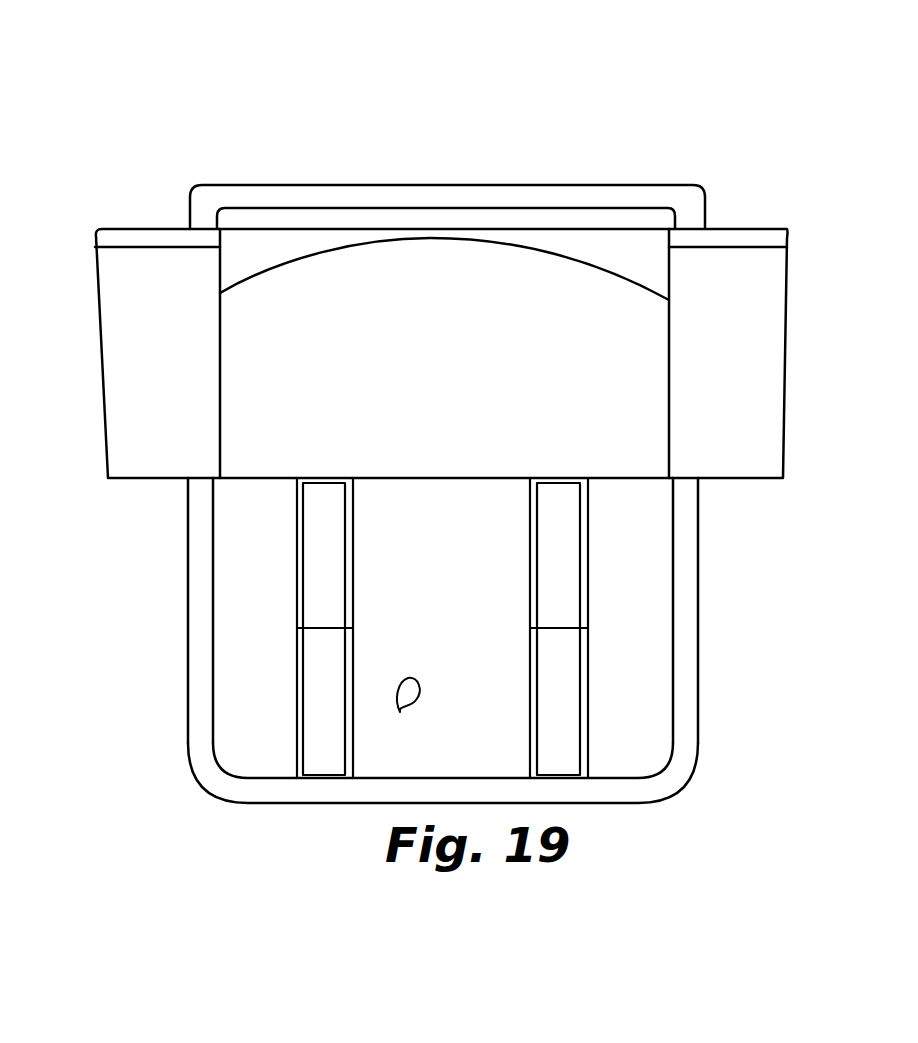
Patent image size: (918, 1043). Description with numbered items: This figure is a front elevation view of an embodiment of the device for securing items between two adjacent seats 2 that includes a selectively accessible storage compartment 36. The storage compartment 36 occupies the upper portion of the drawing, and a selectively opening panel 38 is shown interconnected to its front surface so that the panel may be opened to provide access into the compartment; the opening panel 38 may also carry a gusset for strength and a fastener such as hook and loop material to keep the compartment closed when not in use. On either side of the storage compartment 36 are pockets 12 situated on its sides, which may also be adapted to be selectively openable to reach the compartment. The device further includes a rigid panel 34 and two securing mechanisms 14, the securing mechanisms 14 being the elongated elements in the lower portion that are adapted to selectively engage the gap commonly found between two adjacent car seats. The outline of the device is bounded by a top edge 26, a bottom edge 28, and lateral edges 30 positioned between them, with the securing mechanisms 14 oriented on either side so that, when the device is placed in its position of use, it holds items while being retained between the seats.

The device for securing items between two adjacent seats 2 is at (280, 128).
The pocket 12 is at (140, 283).
The securing mechanism 14 is at (327, 712).
The top edge 26 is at (455, 185).
The bottom edge 28 is at (602, 803).
The lateral edge 30 is at (187, 597).
The rigid panel 34 is at (400, 712).
The storage compartment 36 is at (320, 230).
The opening panel 38 is at (490, 308).